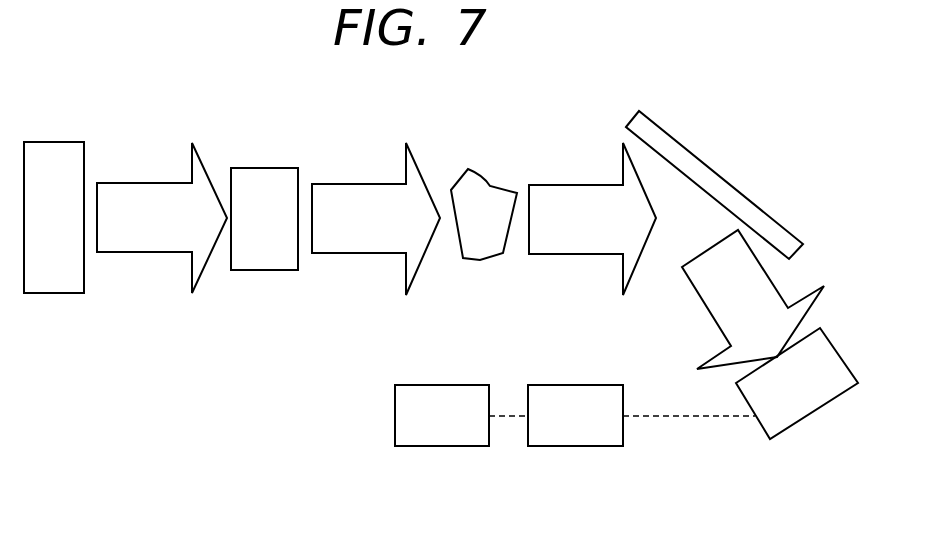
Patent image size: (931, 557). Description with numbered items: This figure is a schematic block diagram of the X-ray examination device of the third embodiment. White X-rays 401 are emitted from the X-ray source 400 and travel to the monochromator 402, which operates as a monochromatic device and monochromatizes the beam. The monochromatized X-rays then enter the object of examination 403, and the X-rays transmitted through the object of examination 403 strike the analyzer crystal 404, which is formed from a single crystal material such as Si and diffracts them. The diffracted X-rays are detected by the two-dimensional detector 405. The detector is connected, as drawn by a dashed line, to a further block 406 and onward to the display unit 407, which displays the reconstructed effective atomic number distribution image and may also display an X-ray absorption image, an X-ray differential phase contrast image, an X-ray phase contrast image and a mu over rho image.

The X-ray source 400 is at (55, 142).
The white X-rays 401 is at (143, 183).
The monochromator 402 is at (266, 168).
The object of examination 403 is at (490, 180).
The analyzer crystal 404 is at (717, 172).
The two-dimensional detector 405 is at (815, 415).
The signal processing unit 406 is at (580, 447).
The display unit 407 is at (442, 447).